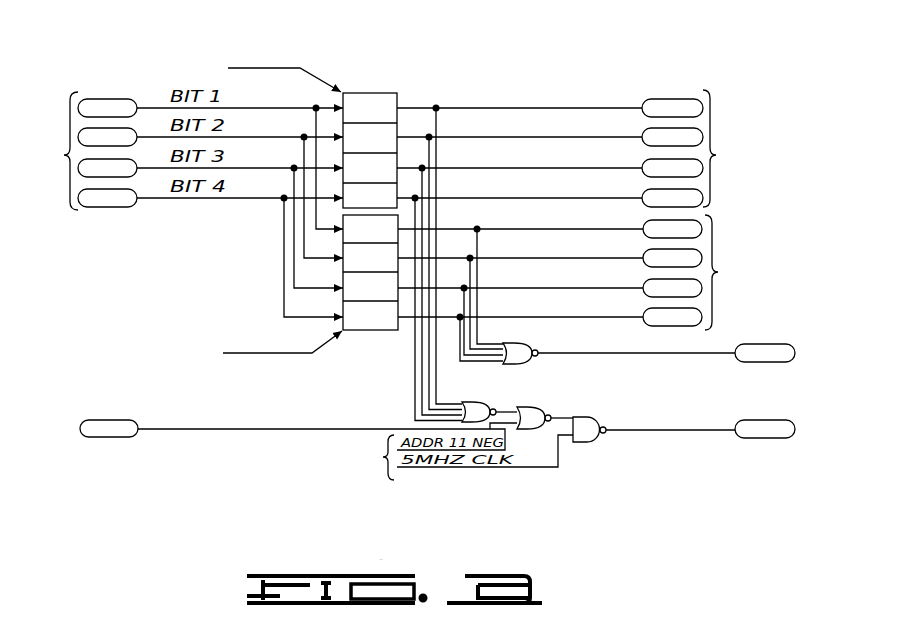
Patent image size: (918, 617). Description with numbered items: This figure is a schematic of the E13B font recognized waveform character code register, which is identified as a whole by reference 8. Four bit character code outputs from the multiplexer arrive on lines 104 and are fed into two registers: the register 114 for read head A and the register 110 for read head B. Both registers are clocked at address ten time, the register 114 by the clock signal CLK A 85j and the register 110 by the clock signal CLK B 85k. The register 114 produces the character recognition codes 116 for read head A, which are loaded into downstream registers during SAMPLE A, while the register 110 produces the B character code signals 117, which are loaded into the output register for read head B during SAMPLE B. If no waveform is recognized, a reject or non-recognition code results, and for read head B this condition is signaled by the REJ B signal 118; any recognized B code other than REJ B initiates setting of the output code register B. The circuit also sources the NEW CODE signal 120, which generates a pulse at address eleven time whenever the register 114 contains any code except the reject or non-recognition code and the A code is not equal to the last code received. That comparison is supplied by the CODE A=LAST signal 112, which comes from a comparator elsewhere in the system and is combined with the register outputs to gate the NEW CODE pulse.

The character code register 8 is at (578, 75).
The CLK A clock 85j is at (265, 71).
The CLK B clock 85k is at (262, 347).
The lines 104 is at (83, 151).
The register for read head B 110 is at (378, 322).
The CODE A=LAST signal 112 is at (100, 426).
The register for read head A 114 is at (368, 100).
The character recognition codes 116 is at (575, 147).
The B character code signals 117 is at (577, 269).
The REJ B signal 118 is at (768, 355).
The NEW CODE signal 120 is at (770, 432).